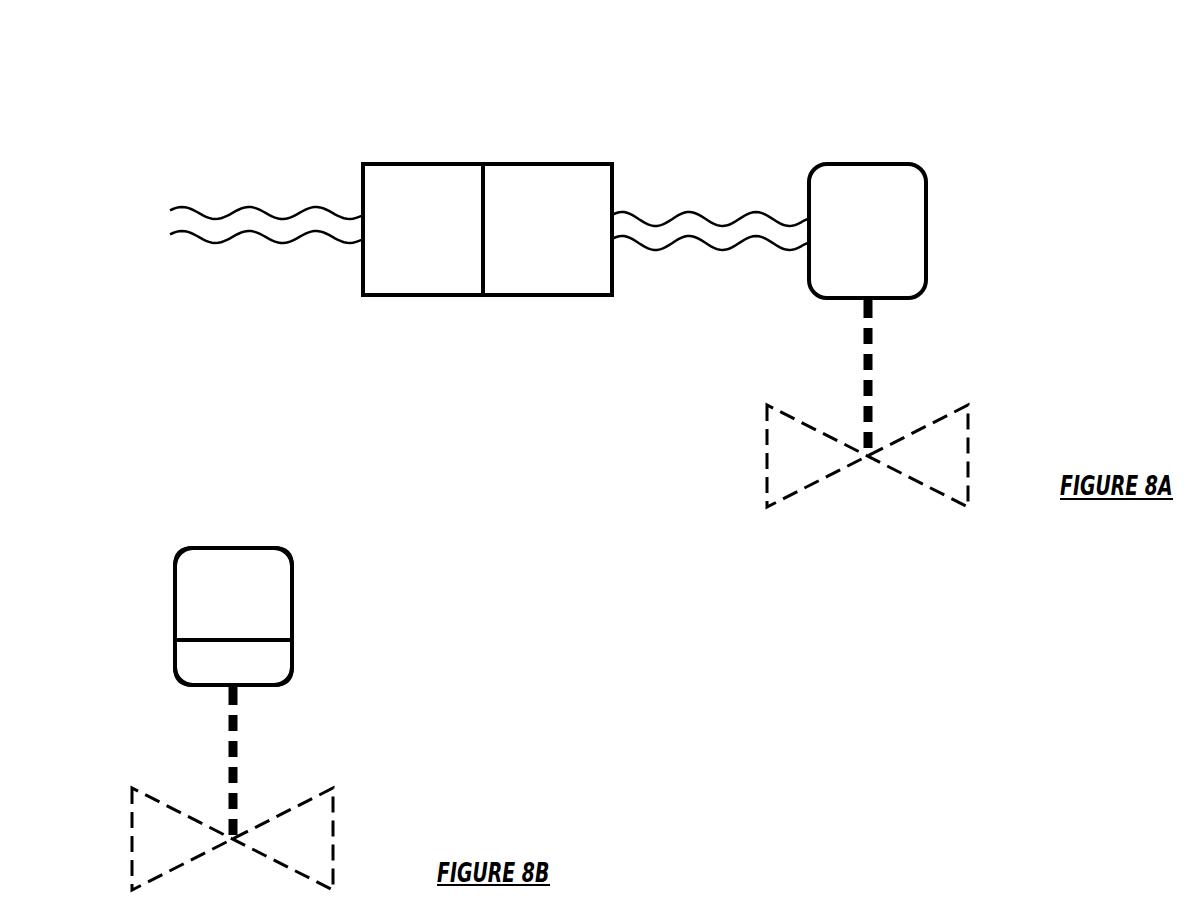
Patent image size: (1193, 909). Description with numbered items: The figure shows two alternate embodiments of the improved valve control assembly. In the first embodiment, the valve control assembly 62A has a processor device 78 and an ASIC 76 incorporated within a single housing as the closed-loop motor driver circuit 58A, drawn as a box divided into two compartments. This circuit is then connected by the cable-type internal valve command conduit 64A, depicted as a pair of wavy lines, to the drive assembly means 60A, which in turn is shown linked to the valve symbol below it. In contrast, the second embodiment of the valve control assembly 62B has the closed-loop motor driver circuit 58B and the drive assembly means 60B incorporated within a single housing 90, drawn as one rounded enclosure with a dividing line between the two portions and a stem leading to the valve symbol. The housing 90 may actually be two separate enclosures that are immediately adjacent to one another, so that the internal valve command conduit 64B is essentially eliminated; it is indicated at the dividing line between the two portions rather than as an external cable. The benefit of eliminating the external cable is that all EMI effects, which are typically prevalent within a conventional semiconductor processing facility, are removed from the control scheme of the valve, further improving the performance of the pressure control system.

In FIG. 8A, the valve control assembly 62A is at (298, 150).
In FIG. 8A, the closed-loop motor driver circuit 58A is at (513, 235).
In FIG. 8A, the processor device 78 is at (422, 164).
In FIG. 8A, the ASIC 76 is at (552, 164).
In FIG. 8A, the internal valve command conduit 64A is at (693, 210).
In FIG. 8A, the drive assembly means 60A is at (926, 230).
In FIG. 8B, the valve control assembly 62B is at (175, 505).
In FIG. 8B, the closed-loop motor driver circuit 58B is at (277, 662).
In FIG. 8B, the housing 90 is at (230, 548).
In FIG. 8B, the internal valve command conduit 64B is at (313, 637).
In FIG. 8B, the drive assembly means 60B is at (173, 658).